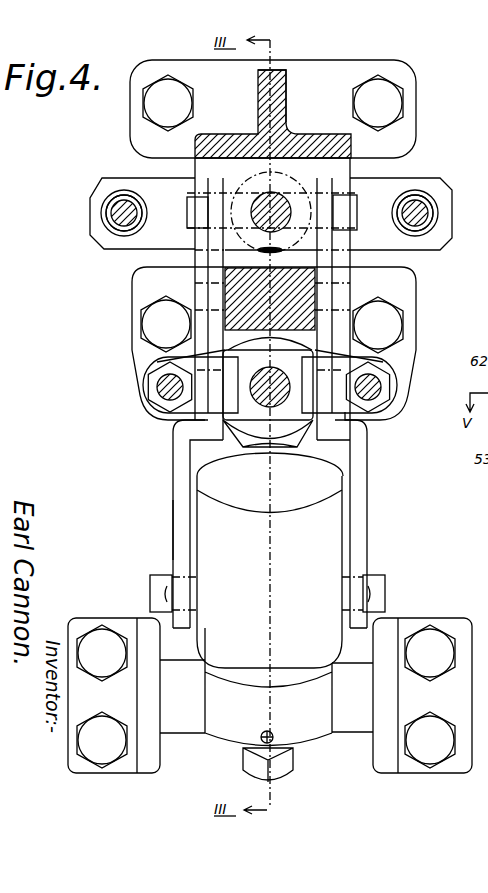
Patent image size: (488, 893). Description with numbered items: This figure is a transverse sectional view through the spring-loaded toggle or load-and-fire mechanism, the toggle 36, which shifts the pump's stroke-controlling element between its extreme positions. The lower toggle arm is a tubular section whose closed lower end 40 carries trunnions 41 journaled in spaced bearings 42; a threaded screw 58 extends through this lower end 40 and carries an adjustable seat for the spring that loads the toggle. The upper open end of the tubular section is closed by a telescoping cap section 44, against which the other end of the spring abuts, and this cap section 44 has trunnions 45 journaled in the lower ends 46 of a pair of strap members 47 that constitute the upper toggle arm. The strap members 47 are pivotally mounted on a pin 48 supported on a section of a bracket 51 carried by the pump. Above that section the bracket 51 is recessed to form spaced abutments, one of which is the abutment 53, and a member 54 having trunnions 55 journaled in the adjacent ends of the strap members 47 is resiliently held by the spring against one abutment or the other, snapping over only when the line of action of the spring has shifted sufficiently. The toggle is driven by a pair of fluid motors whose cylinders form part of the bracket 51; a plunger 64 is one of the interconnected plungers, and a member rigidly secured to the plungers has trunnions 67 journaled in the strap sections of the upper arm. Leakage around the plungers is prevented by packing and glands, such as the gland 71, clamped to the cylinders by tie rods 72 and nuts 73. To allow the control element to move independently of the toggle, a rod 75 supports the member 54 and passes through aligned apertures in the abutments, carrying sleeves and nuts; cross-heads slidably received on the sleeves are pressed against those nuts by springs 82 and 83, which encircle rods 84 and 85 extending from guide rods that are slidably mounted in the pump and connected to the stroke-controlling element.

The toggle 36 is at (269, 579).
The lower end 40 is at (258, 733).
The trunnions 41 is at (205, 690).
The bearings 42 is at (266, 696).
The telescoping cap section 44 is at (270, 483).
The trunnions 45 is at (160, 575).
The lower ends 46 is at (174, 518).
The strap members 47 is at (175, 482).
The pin 48 is at (190, 283).
The bracket 51 is at (273, 109).
The abutment 53 is at (272, 150).
The member 54 is at (340, 181).
The trunnions 55 is at (190, 196).
The threaded screw 58 is at (292, 768).
The plunger 64 is at (262, 388).
The trunnions 67 is at (187, 424).
The gland 71 is at (272, 436).
The tie rods 72 is at (176, 406).
The nuts 73 is at (152, 376).
The rod 75 is at (264, 192).
The spring 82 is at (100, 215).
The spring 83 is at (455, 206).
The rod 84 is at (124, 218).
The rod 85 is at (416, 216).